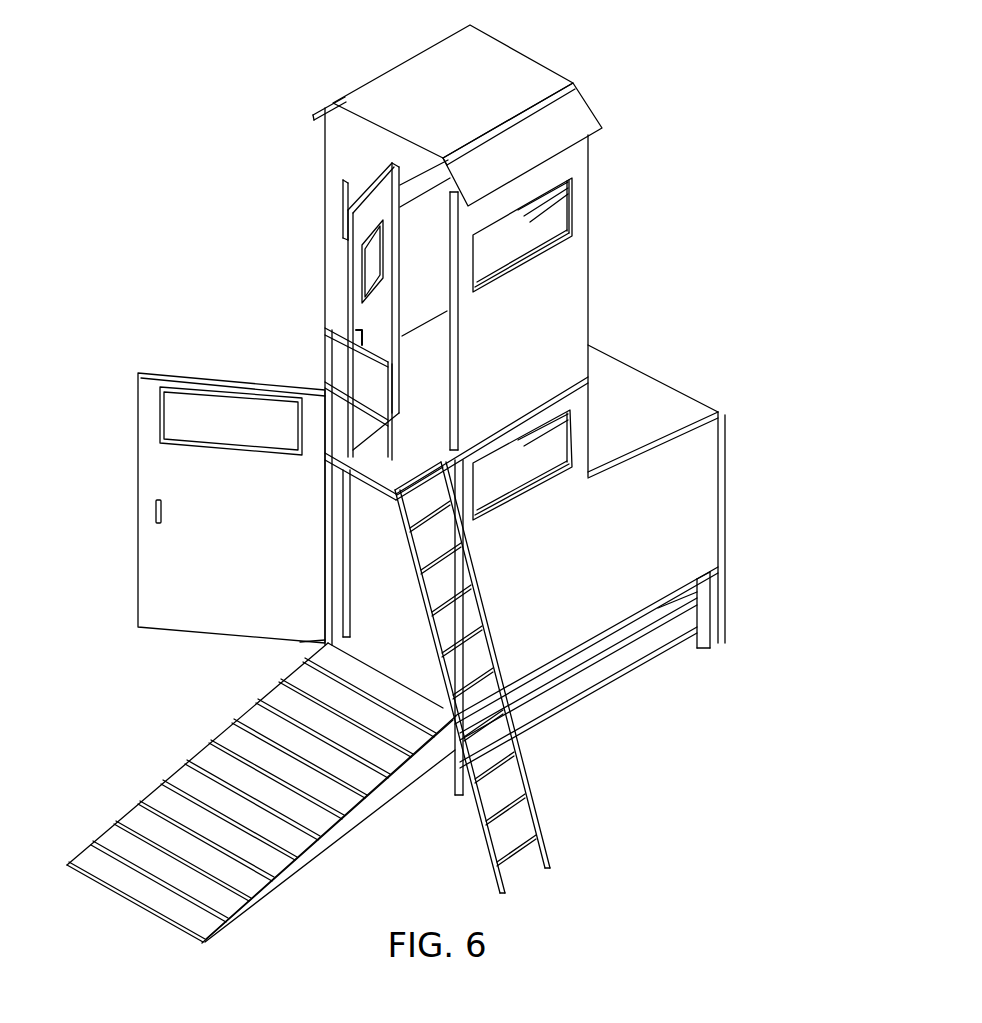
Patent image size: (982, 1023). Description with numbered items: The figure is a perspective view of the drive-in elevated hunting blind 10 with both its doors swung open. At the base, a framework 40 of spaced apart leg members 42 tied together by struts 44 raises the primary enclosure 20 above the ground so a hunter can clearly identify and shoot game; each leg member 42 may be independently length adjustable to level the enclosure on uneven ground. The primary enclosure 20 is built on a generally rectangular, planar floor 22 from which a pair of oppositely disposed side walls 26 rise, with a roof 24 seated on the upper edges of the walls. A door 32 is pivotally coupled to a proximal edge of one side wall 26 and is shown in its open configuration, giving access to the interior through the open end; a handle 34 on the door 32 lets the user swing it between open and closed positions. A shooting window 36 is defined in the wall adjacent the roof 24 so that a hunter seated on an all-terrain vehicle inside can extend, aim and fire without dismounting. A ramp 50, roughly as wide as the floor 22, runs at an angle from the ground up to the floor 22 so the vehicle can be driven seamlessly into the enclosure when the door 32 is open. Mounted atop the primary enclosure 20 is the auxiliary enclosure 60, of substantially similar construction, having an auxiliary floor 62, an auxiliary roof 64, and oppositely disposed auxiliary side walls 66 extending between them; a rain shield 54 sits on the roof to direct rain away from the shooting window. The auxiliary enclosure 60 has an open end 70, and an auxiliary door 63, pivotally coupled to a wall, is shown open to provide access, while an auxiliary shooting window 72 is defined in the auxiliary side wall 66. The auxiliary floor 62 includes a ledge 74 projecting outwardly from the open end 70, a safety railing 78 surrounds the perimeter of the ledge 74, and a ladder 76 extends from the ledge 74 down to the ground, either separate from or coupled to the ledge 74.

The hunting blind 10 is at (214, 26).
The primary enclosure 20 is at (758, 462).
The floor 22 is at (381, 645).
The roof 24 is at (675, 411).
The side walls 26 is at (722, 532).
The door 32 is at (140, 570).
The handle 34 is at (154, 505).
The shooting window 36 is at (531, 468).
The framework 40 is at (614, 684).
The leg members 42 is at (712, 640).
The struts 44 is at (552, 697).
The ramp 50 is at (261, 793).
The rain shield 54 is at (600, 116).
The auxiliary enclosure 60 is at (622, 261).
The auxiliary floor 62 is at (414, 366).
The auxiliary door 63 is at (347, 266).
The auxiliary roof 64 is at (302, 101).
The auxiliary side walls 66 is at (588, 313).
The open end 70 is at (458, 318).
The auxiliary shooting window 72 is at (574, 222).
The ledge 74 is at (420, 466).
The ladder 76 is at (538, 802).
The safety railing 78 is at (326, 332).